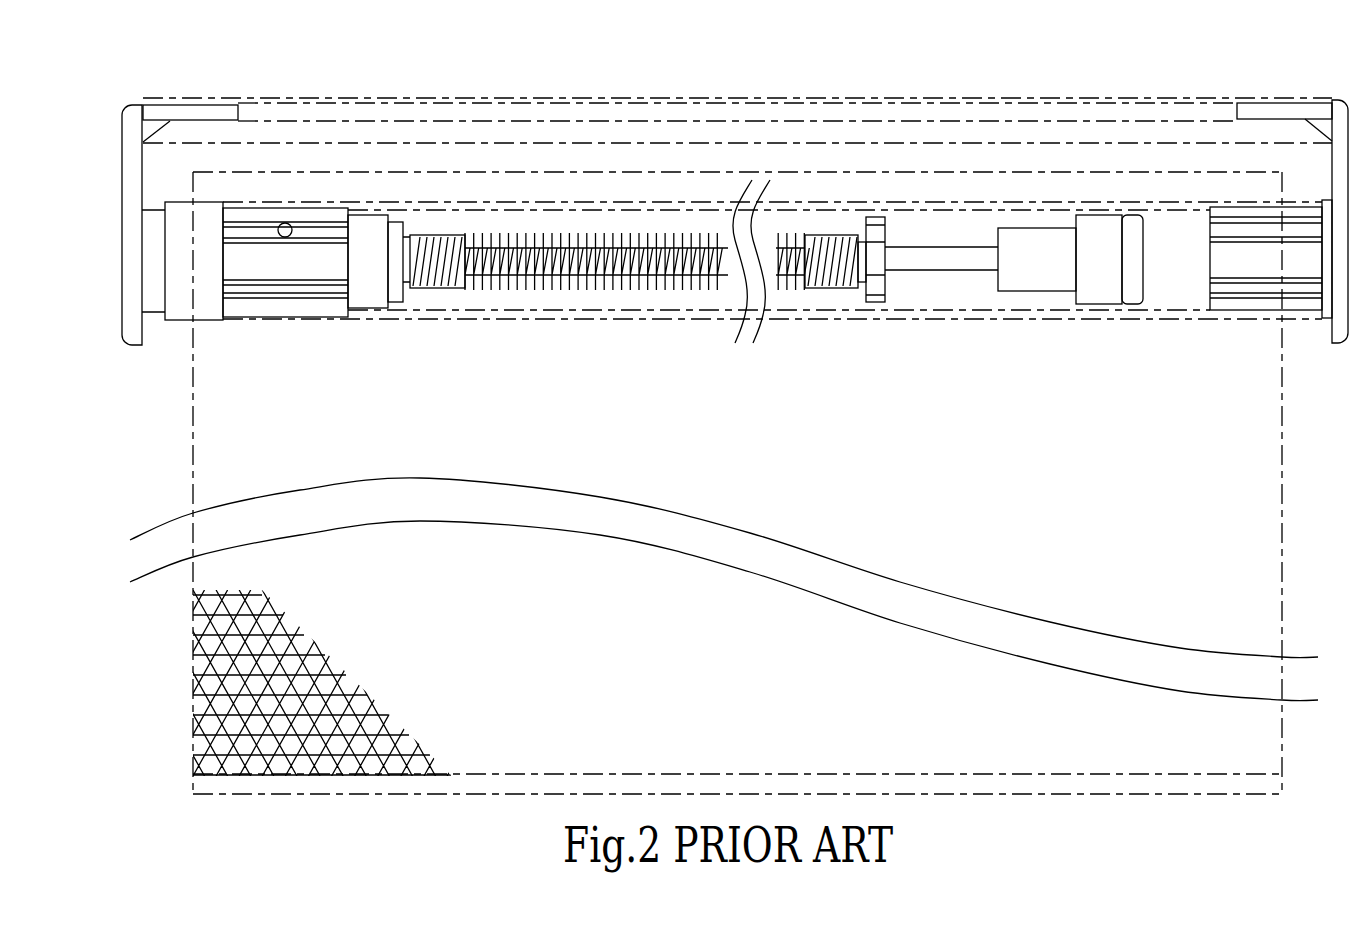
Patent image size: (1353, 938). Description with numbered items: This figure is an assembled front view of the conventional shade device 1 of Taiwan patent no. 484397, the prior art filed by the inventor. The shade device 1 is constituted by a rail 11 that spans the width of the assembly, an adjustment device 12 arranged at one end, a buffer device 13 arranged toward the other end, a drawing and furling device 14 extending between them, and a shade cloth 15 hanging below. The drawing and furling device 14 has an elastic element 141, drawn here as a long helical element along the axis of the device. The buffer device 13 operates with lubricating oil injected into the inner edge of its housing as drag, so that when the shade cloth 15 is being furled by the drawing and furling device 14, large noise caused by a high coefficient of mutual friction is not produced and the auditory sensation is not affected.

The shade device 1 is at (750, 93).
The rail 11 is at (423, 98).
The adjustment device 12 is at (341, 325).
The buffer device 13 is at (1102, 316).
The drawing and furling device 14 is at (704, 292).
The elastic element 141 is at (557, 273).
The shade cloth 15 is at (1273, 508).